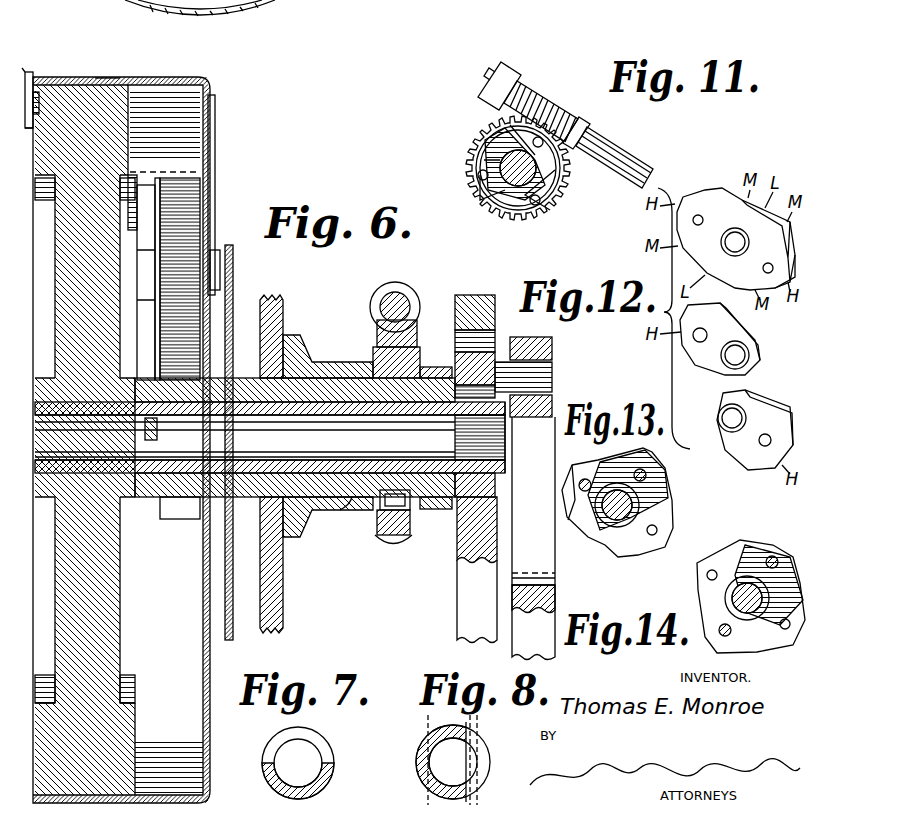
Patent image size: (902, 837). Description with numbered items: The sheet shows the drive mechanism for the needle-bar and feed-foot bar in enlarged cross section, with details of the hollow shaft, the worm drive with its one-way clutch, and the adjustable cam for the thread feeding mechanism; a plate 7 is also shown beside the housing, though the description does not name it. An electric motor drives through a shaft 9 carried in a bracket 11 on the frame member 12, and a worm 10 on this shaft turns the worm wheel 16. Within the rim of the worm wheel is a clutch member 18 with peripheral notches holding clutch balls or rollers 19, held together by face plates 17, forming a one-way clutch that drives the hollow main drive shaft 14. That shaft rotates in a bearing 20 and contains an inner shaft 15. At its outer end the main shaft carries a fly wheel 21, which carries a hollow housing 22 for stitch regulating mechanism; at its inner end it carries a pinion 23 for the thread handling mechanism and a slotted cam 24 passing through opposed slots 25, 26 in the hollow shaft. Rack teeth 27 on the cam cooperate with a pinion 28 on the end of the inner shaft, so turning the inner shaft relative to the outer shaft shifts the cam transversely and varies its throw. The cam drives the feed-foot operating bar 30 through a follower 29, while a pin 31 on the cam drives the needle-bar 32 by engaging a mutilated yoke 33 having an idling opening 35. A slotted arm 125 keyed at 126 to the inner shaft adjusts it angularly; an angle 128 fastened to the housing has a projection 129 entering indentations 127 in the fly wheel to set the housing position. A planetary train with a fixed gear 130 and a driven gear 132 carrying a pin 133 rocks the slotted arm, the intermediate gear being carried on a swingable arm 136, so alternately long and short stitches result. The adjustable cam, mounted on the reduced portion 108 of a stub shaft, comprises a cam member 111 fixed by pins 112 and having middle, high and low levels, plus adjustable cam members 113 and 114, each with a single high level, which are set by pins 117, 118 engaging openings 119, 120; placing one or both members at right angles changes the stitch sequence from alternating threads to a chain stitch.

In FIG. 6, the plate 7 is at (236, 287).
In FIG. 11, the shaft 9 is at (625, 142).
In FIG. 6, the worm 10 is at (400, 285).
In FIG. 11, the worm 10 is at (535, 100).
In FIG. 11, the bracket 11 is at (510, 73).
In FIG. 6, the frame member 12 is at (284, 603).
In FIG. 6, the main drive shaft 14 is at (378, 530).
In FIG. 11, the main drive shaft 14 is at (503, 205).
In FIG. 7, the main drive shaft 14 is at (268, 760).
In FIG. 8, the main drive shaft 14 is at (430, 730).
In FIG. 6, the inner shaft 15 is at (352, 500).
In FIG. 11, the inner shaft 15 is at (500, 190).
In FIG. 6, the worm wheel 16 is at (376, 328).
In FIG. 11, the worm wheel 16 is at (481, 133).
In FIG. 6, the face plates 17 is at (372, 352).
In FIG. 6, the clutch member 18 is at (385, 512).
In FIG. 11, the clutch member 18 is at (490, 155).
In FIG. 6, the clutch balls or rollers 19 is at (398, 545).
In FIG. 11, the clutch balls or rollers 19 is at (478, 177).
In FIG. 6, the bearing 20 is at (305, 520).
In FIG. 6, the fly wheel 21 is at (110, 735).
In FIG. 6, the hollow housing 22 is at (200, 82).
In FIG. 6, the pinion 23 is at (440, 365).
In FIG. 6, the cam 24 is at (494, 340).
In FIG. 8, the slot 25 is at (417, 758).
In FIG. 8, the slot 26 is at (490, 768).
In FIG. 6, the rack teeth 27 is at (456, 500).
In FIG. 6, the pinion 28 is at (450, 428).
In FIG. 6, the follower 29 is at (475, 296).
In FIG. 6, the feed-foot operating bar 30 is at (468, 580).
In FIG. 6, the pin 31 is at (535, 380).
In FIG. 6, the needle-bar 32 is at (550, 612).
In FIG. 6, the mutilated yoke 33 is at (553, 345).
In FIG. 6, the idling opening 35 is at (532, 527).
In FIG. 13, the reduced portion 108 is at (635, 540).
In FIG. 14, the reduced portion 108 is at (705, 630).
In FIG. 12, the cam member 111 is at (718, 232).
In FIG. 13, the cam member 111 is at (668, 515).
In FIG. 14, the cam member 111 is at (752, 548).
In FIG. 13, the pins 112 is at (658, 530).
In FIG. 14, the pins 112 is at (706, 573).
In FIG. 12, the adjustable cam member 113 is at (755, 345).
In FIG. 13, the adjustable cam member 113 is at (575, 530).
In FIG. 12, the adjustable cam member 114 is at (765, 403).
In FIG. 13, the adjustable cam member 114 is at (660, 478).
In FIG. 14, the adjustable cam member 114 is at (698, 578).
In FIG. 13, the pin 117 is at (590, 478).
In FIG. 14, the pin 117 is at (715, 640).
In FIG. 13, the pin 118 is at (648, 472).
In FIG. 14, the pin 118 is at (775, 555).
In FIG. 12, the opening 119 is at (700, 343).
In FIG. 12, the opening 120 is at (762, 447).
In FIG. 6, the slotted arm 125 is at (150, 185).
In FIG. 6, the key 126 is at (160, 428).
In FIG. 6, the indentations 127 is at (40, 95).
In FIG. 6, the angle 128 is at (27, 72).
In FIG. 6, the projection 129 is at (110, 80).
In FIG. 6, the fixed gear 130 is at (185, 520).
In FIG. 6, the driven gear 132 is at (203, 190).
In FIG. 6, the pin 133 is at (214, 205).
In FIG. 6, the arm 136 is at (205, 170).